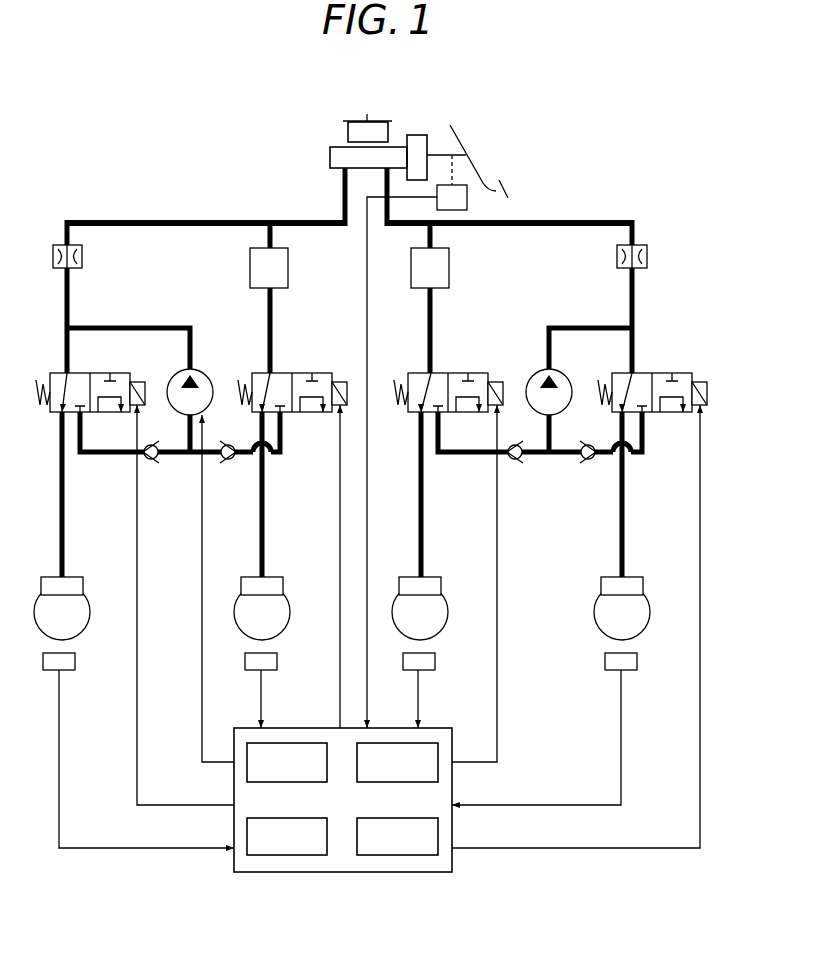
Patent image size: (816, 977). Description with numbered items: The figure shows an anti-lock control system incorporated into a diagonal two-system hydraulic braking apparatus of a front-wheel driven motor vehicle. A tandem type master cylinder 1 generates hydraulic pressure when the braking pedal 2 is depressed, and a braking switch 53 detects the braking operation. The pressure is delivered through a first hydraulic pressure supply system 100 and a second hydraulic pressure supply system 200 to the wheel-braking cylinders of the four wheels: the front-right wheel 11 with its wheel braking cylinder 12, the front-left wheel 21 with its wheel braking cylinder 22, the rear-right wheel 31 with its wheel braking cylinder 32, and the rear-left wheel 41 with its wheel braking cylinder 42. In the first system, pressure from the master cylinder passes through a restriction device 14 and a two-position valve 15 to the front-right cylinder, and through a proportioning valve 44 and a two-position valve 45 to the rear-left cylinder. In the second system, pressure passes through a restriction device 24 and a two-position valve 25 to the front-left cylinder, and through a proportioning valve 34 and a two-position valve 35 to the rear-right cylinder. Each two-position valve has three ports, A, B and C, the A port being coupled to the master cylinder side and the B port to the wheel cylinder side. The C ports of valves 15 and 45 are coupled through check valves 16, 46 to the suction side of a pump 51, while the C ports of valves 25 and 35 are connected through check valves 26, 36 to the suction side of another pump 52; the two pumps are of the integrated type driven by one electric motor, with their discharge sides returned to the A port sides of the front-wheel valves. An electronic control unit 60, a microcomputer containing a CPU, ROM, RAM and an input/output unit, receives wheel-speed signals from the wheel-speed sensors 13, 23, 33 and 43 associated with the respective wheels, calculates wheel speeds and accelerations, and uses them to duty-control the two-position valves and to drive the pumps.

The tandem type master cylinder 1 is at (330, 156).
The braking pedal 2 is at (477, 171).
The braking switch 53 is at (467, 197).
The first hydraulic pressure supply system 100 is at (147, 220).
The second hydraulic pressure supply system 200 is at (589, 220).
The restriction device 14 is at (82, 256).
The restriction device 24 is at (647, 256).
The proportioning valve 44 is at (288, 258).
The proportioning valve 34 is at (449, 258).
The two-position valve 15 is at (105, 366).
The two-position valve 45 is at (303, 366).
The two-position valve 35 is at (455, 366).
The two-position valve 25 is at (658, 366).
The pump 51 is at (211, 373).
The pump 52 is at (572, 373).
The check valve 16 is at (152, 462).
The check valve 46 is at (229, 462).
The check valve 36 is at (514, 462).
The check valve 26 is at (591, 462).
The front-right wheel 11 is at (89, 604).
The front-right wheel braking cylinder 12 is at (72, 576).
The wheel-speed sensor 13 is at (75, 661).
The rear-left wheel 41 is at (289, 604).
The rear-left wheel braking cylinder 42 is at (272, 576).
The wheel-speed sensor 43 is at (277, 661).
The rear-right wheel 31 is at (447, 604).
The rear-right wheel braking cylinder 32 is at (431, 576).
The wheel-speed sensor 33 is at (435, 661).
The front-left wheel 21 is at (649, 604).
The front-left wheel braking cylinder 22 is at (633, 576).
The wheel-speed sensor 23 is at (637, 661).
The electronic control unit 60 is at (446, 726).